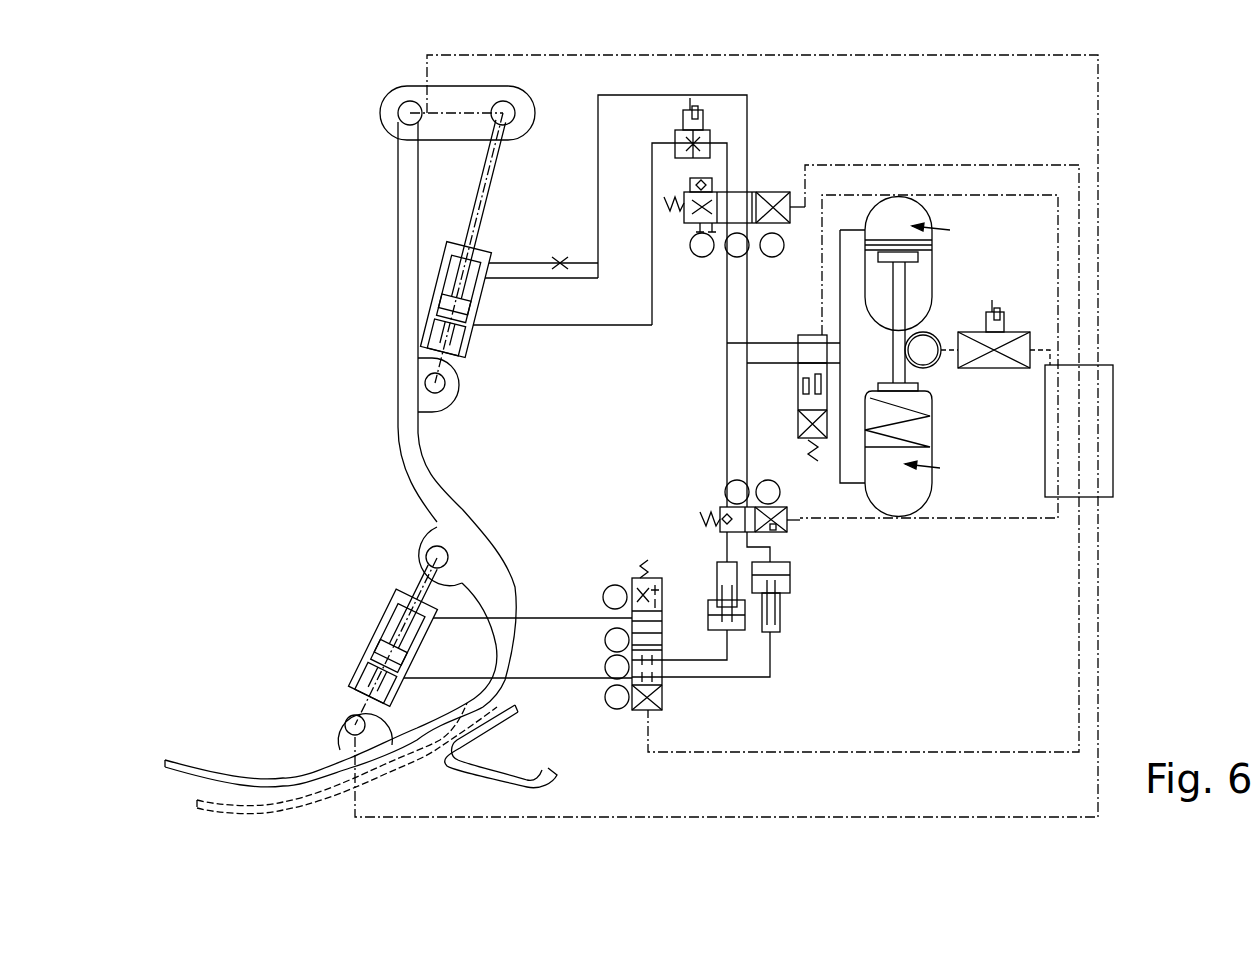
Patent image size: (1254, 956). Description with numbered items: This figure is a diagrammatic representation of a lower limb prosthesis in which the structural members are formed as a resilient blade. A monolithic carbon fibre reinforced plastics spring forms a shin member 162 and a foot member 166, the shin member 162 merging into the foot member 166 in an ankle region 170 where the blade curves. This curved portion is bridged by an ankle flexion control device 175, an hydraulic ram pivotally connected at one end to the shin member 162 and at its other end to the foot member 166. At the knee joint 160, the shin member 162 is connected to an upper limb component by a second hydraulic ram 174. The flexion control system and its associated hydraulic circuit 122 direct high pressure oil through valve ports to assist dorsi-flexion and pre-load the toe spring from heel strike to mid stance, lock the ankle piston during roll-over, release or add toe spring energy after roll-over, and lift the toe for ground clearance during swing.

The knee joint 160 is at (368, 117).
The shin member 162 is at (403, 280).
The ankle region 170 is at (518, 587).
The second hydraulic ram 174 is at (470, 348).
The ankle flexion control device 175 is at (368, 637).
The foot member 166 is at (295, 772).
The hydraulic circuit 122 is at (632, 410).